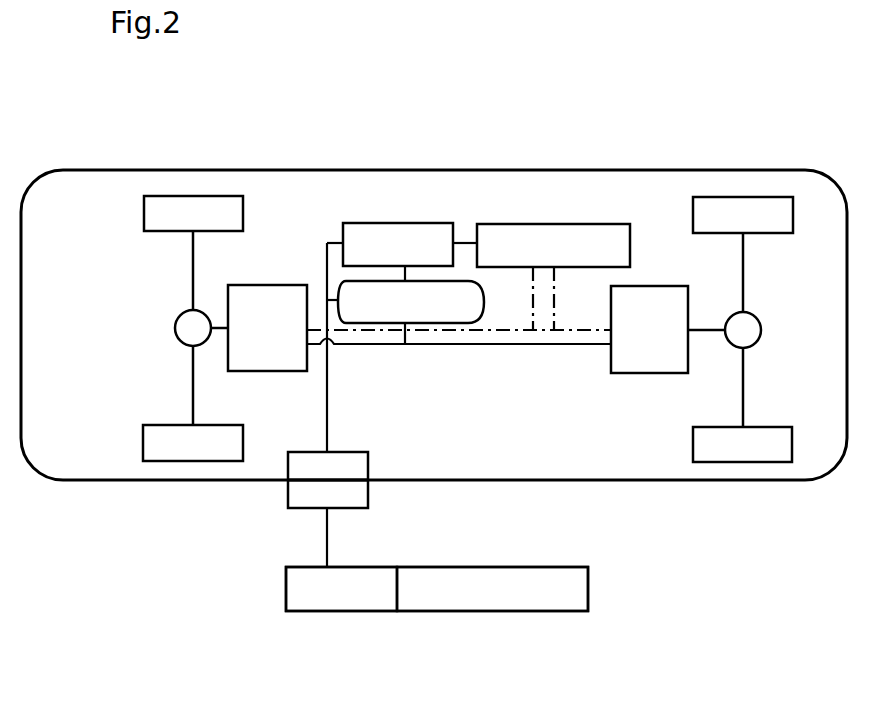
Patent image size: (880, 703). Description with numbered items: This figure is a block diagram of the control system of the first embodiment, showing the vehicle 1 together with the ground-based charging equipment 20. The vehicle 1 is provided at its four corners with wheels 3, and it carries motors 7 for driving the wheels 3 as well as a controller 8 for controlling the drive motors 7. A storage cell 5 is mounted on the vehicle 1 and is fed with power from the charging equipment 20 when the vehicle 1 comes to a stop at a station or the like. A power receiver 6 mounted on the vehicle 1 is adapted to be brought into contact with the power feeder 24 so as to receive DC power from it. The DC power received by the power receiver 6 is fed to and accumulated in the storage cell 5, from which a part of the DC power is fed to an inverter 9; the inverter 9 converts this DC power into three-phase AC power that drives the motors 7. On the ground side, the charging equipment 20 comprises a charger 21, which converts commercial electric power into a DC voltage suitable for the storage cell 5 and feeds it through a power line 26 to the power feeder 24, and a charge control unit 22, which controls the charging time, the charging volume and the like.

The vehicle 1 is at (398, 168).
The wheels 3 is at (205, 197).
The storage cell 5 is at (368, 260).
The power receiver 6 is at (288, 468).
The motors 7 is at (274, 320).
The controller 8 is at (501, 260).
The inverter 9 is at (366, 317).
The charging equipment 20 is at (427, 616).
The charger 21 is at (286, 583).
The charge control unit 22 is at (588, 585).
The power feeder 24 is at (288, 497).
The power line 26 is at (328, 545).